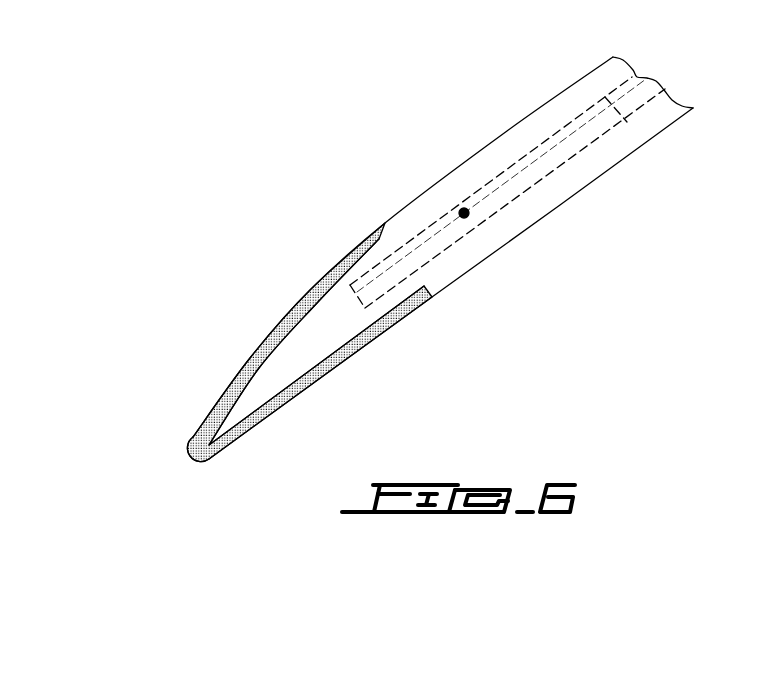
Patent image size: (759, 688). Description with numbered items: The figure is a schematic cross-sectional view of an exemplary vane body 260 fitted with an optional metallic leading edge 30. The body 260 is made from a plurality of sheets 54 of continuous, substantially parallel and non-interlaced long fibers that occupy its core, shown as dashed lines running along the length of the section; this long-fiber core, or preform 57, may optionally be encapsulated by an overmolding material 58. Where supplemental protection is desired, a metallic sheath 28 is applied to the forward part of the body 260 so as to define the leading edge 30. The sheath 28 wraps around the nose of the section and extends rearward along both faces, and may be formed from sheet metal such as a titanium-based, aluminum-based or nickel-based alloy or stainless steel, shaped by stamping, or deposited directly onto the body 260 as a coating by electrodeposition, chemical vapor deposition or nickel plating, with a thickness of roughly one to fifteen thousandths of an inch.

The metallic sheath 28 is at (250, 360).
The metallic leading edge 30 is at (190, 446).
The sheet of long fibers 54 is at (553, 140).
The preform 57 is at (464, 208).
The overmolding material 58 is at (332, 322).
The body of vane 260 is at (598, 308).